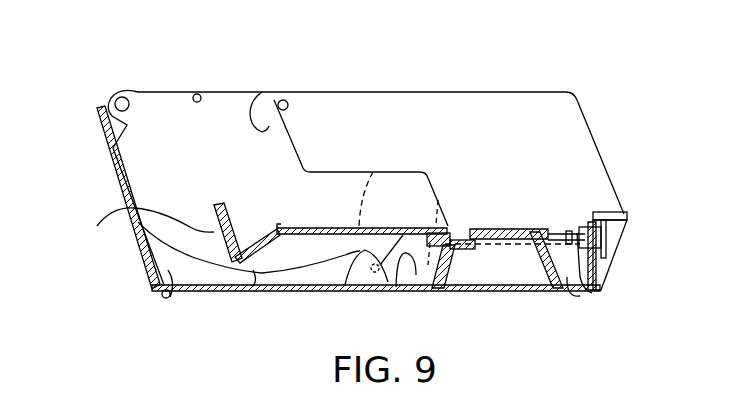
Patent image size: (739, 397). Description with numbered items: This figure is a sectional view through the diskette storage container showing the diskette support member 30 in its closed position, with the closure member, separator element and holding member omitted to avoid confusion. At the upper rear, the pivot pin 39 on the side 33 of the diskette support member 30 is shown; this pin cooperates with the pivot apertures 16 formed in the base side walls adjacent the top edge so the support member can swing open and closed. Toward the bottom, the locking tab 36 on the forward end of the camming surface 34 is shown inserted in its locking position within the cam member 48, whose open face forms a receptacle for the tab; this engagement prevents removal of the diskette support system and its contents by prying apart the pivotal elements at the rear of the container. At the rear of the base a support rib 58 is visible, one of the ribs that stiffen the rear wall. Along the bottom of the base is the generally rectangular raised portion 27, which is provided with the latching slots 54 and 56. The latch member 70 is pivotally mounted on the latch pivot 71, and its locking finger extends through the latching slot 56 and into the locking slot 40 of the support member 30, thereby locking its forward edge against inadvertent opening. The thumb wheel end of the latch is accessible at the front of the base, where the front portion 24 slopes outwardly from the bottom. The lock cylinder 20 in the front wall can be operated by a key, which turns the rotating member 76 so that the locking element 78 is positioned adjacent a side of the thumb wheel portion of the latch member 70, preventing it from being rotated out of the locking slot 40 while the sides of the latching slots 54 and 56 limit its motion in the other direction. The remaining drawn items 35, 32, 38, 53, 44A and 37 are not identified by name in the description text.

The diskette support member 30 is at (174, 75).
The pivot pin 39 is at (138, 91).
The pin 35 is at (201, 95).
The side 33 is at (262, 92).
The pivot apertures 16 is at (290, 102).
The cover 32 is at (373, 172).
The locking slot 40 is at (440, 228).
The latching slot 56 is at (455, 238).
The raised portion 27 is at (503, 230).
The latching slot 54 is at (557, 230).
The sloping front portion 24 is at (628, 218).
The lock cylinder 20 is at (603, 240).
The rotating member 76 is at (598, 270).
The locking element 78 is at (590, 294).
The latch member 70 is at (502, 254).
The latch pivot 71 is at (528, 235).
The strut 38 is at (432, 290).
The locking tab 36 is at (412, 276).
The cam 53 is at (395, 288).
The cam member 48 is at (323, 288).
The camming surface 34 is at (255, 286).
The support rib 58 is at (177, 291).
The cable 44A is at (147, 230).
The side wall 37 is at (112, 128).